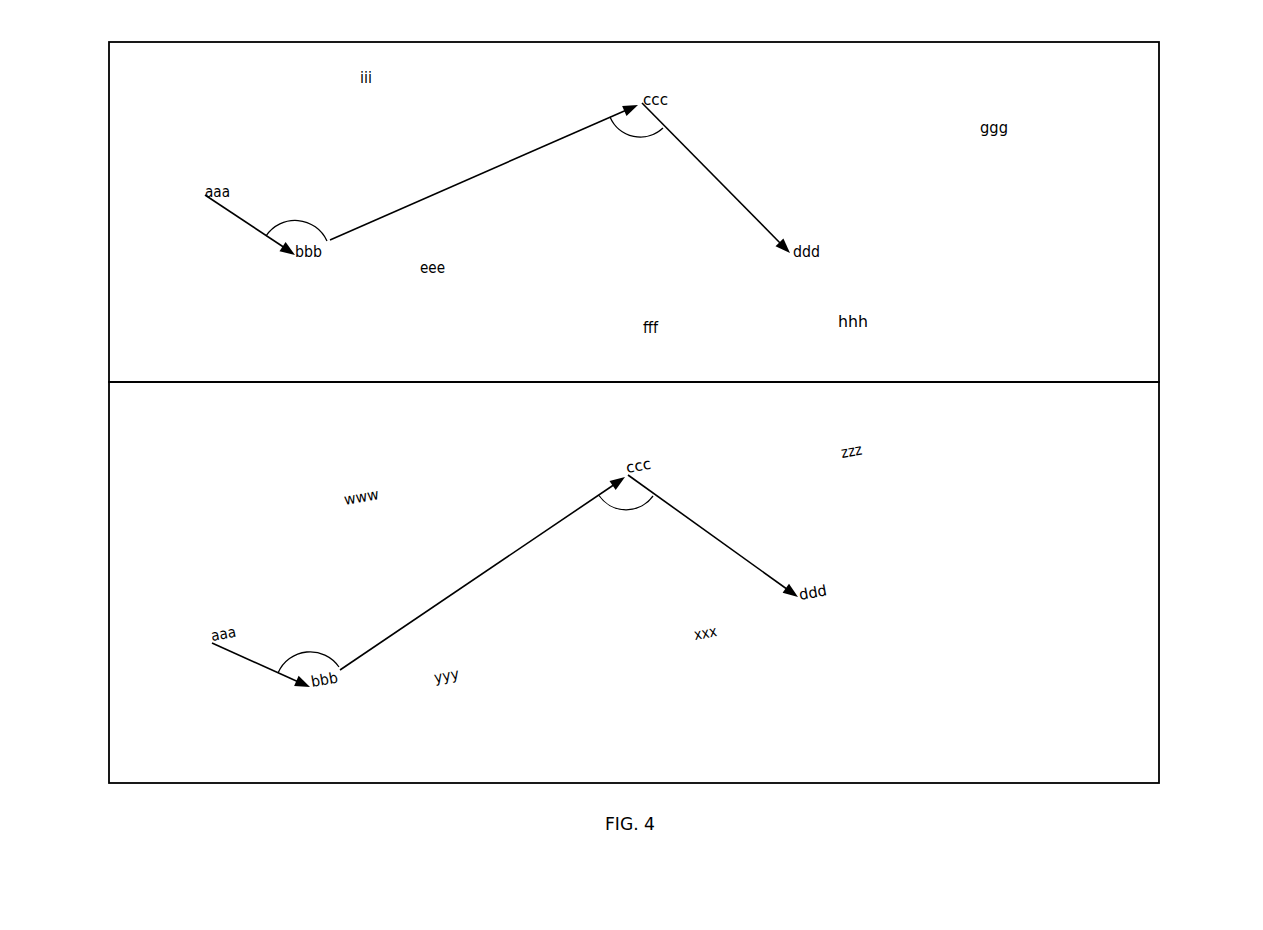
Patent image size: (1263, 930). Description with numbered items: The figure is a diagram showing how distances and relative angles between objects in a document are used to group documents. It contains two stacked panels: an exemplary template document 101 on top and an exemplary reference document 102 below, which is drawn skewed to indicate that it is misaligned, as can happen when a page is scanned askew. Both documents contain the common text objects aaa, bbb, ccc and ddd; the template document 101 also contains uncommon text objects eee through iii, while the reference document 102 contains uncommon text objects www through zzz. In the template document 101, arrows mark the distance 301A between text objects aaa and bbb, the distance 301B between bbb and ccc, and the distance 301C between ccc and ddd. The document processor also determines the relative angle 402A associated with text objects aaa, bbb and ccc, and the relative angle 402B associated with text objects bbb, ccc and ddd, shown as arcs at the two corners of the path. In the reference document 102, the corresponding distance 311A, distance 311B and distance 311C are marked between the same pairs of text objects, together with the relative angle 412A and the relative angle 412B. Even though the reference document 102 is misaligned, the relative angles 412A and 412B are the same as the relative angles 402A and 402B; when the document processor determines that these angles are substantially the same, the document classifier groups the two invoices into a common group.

The template document 101 is at (1159, 123).
The reference document 102 is at (1159, 588).
The distance 301A is at (240, 215).
The distance 301B is at (468, 181).
The distance 301C is at (703, 162).
The relative angle 402A is at (308, 226).
The relative angle 402B is at (645, 135).
The distance 311A is at (252, 657).
The distance 311B is at (468, 580).
The distance 311C is at (697, 523).
The relative angle 412A is at (318, 654).
The relative angle 412B is at (633, 509).